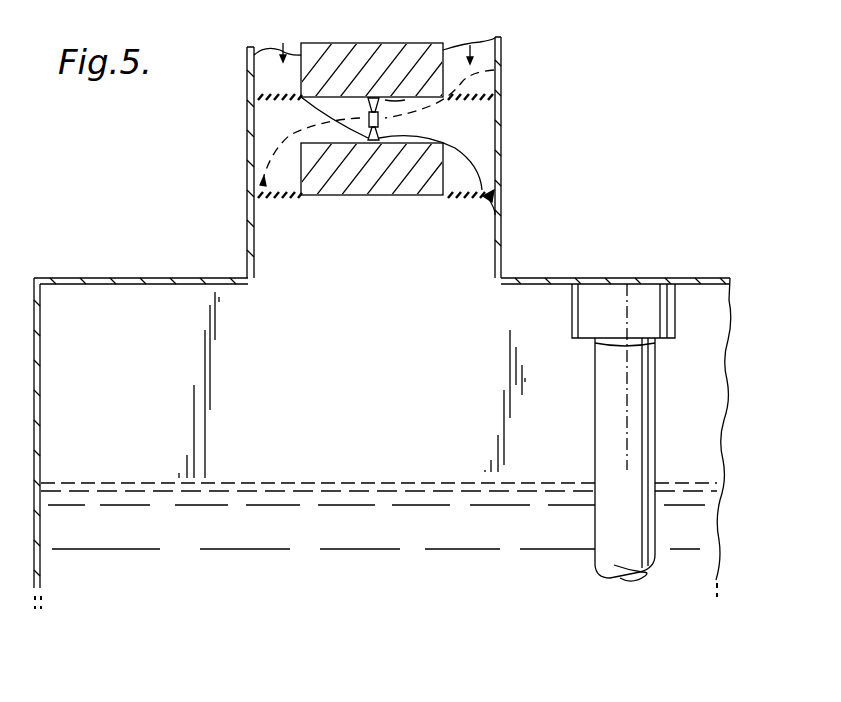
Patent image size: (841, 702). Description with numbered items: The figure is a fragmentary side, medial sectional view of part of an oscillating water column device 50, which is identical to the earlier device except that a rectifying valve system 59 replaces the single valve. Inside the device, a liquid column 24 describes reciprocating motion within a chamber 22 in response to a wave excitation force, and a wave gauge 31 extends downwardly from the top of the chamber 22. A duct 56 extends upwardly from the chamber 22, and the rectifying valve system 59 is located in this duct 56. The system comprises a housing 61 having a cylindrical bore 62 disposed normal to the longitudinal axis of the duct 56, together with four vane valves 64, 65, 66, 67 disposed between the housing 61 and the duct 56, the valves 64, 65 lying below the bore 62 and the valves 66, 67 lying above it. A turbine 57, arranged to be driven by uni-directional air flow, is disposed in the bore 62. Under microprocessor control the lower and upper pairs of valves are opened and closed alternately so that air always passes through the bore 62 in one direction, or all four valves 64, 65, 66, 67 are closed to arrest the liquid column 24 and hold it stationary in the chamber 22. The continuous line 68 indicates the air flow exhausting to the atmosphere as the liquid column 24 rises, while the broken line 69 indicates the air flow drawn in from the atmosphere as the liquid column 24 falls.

The oscillating water column device 50 is at (82, 262).
The liquid column 24 is at (145, 512).
The chamber 22 is at (530, 328).
The wave gauge 31 is at (656, 418).
The duct 56 is at (503, 163).
The turbine 57 is at (376, 140).
The rectifying valve system 59 is at (505, 30).
The housing 61 is at (408, 105).
The cylindrical bore 62 is at (366, 35).
The vane valve 64 is at (288, 196).
The vane valve 65 is at (498, 214).
The vane valve 66 is at (300, 98).
The vane valve 67 is at (496, 100).
The continuous line 68 is at (248, 56).
The broken line 69 is at (502, 70).